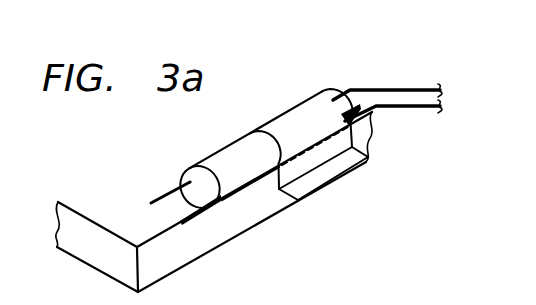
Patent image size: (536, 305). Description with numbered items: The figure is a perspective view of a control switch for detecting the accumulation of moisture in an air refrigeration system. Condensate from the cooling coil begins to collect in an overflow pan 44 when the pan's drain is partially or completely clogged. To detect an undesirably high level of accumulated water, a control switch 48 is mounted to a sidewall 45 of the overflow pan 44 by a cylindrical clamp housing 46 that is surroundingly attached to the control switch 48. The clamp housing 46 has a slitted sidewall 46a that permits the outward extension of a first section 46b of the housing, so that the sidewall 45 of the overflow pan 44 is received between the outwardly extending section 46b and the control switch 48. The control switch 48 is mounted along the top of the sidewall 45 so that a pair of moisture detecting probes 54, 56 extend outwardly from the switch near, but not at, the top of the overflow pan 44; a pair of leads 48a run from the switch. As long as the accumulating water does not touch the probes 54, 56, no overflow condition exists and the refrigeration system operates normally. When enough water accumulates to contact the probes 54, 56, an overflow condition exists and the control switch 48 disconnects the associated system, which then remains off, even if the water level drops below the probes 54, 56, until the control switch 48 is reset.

The overflow pan 44 is at (222, 247).
The sidewall 45 is at (256, 215).
The cylindrical clamp housing 46 is at (273, 121).
The slitted sidewall 46a is at (330, 163).
The first section 46b is at (285, 180).
The control switch 48 is at (201, 162).
The lead wires 48a is at (398, 90).
The moisture detecting probe 54 is at (151, 203).
The moisture detecting probe 56 is at (179, 222).